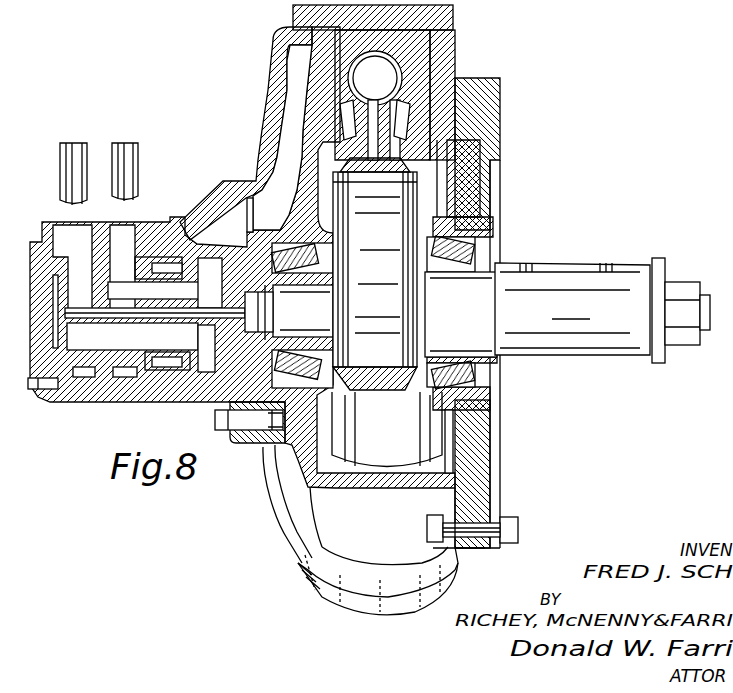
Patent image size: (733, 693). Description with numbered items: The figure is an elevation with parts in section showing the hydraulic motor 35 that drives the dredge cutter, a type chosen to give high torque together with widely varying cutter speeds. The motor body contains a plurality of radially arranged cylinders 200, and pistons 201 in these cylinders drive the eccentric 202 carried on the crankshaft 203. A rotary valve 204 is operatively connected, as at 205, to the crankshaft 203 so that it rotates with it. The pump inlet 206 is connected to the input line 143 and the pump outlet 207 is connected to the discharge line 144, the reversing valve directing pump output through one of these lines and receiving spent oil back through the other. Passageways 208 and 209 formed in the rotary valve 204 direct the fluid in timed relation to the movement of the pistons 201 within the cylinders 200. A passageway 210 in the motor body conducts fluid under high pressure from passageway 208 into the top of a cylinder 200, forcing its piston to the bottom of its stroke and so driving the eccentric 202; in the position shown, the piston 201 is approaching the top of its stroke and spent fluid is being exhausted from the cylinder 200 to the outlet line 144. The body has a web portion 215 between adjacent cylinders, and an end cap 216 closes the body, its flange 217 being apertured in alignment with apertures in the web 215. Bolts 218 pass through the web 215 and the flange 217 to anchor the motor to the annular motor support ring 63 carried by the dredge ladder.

The hydraulic motor 35 is at (265, 34).
The piston 201 is at (335, 36).
The annular motor support ring 63 is at (490, 115).
The input line 143 is at (82, 155).
The discharge line 144 is at (133, 166).
The passageway 210 is at (268, 147).
The cylinder 200 is at (410, 148).
The pump inlet 206 is at (68, 222).
The pump outlet 207 is at (138, 222).
The passageway 209 is at (195, 293).
The eccentric 202 is at (387, 312).
The passageway 208 is at (177, 343).
The operative connection 205 is at (245, 322).
The crankshaft 203 is at (567, 310).
The rotary valve 204 is at (194, 368).
The end cap 216 is at (473, 446).
The bolt 218 is at (503, 513).
The web portion 215 is at (452, 500).
The flange 217 is at (468, 548).